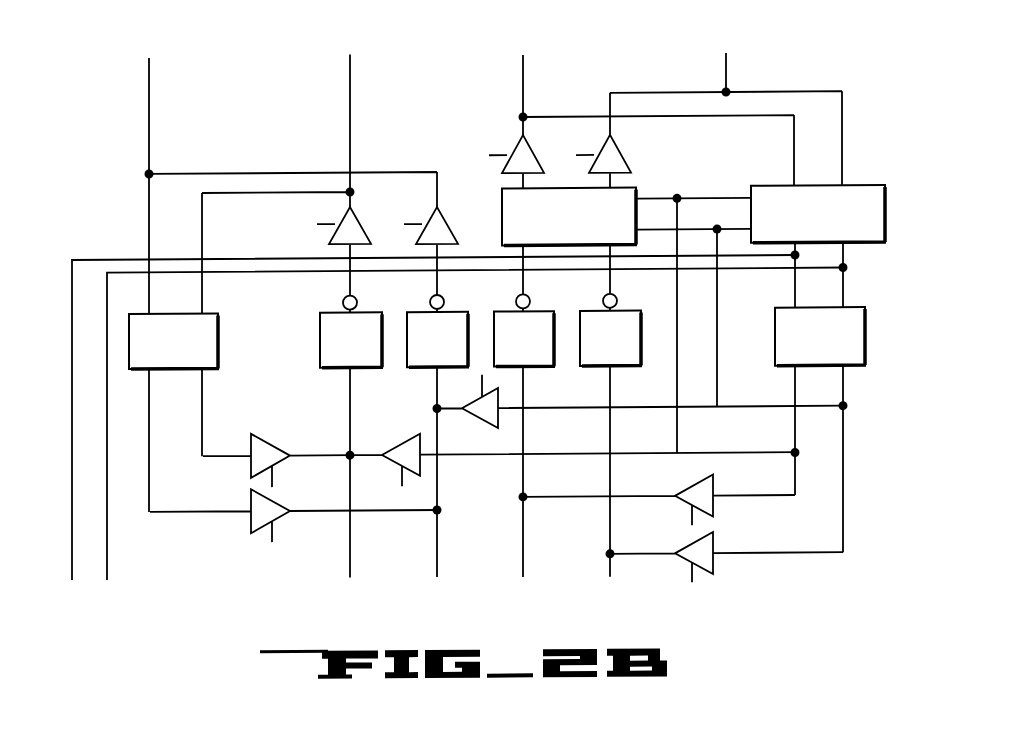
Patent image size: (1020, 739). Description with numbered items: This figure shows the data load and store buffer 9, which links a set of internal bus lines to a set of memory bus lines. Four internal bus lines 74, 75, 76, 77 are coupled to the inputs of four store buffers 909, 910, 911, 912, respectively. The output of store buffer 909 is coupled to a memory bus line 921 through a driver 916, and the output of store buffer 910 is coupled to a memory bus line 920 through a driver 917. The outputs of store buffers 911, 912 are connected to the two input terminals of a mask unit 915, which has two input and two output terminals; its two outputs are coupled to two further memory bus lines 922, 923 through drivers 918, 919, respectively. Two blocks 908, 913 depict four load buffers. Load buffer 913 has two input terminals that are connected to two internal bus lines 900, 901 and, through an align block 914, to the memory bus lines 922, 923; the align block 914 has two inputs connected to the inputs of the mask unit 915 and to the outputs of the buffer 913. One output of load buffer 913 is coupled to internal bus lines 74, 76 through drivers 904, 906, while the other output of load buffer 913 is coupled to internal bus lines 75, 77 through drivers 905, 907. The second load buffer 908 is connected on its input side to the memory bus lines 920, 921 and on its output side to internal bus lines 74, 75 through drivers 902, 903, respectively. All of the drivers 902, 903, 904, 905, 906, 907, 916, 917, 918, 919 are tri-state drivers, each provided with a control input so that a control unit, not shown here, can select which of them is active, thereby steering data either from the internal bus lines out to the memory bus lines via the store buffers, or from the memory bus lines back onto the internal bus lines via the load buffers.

The data load and store buffer 9 is at (105, 51).
The internal bus line 74 is at (350, 572).
The internal bus line 75 is at (437, 573).
The internal bus line 76 is at (523, 574).
The internal bus line 77 is at (610, 574).
The internal bus line 900 is at (73, 568).
The internal bus line 901 is at (107, 569).
The driver 902 is at (273, 445).
The driver 903 is at (277, 494).
The driver 904 is at (390, 463).
The driver 905 is at (472, 423).
The driver 906 is at (716, 512).
The driver 907 is at (716, 570).
The load buffer 908 is at (238, 312).
The store buffer 909 is at (362, 308).
The store buffer 910 is at (456, 310).
The store buffer 911 is at (542, 310).
The store buffer 912 is at (630, 311).
The load buffer 913 is at (855, 313).
The align block 914 is at (860, 189).
The mask unit 915 is at (638, 190).
The driver 916 is at (381, 223).
The driver 917 is at (450, 230).
The driver 918 is at (557, 158).
The driver 919 is at (625, 165).
The memory bus line 920 is at (149, 119).
The memory bus line 921 is at (350, 115).
The memory bus line 922 is at (523, 94).
The memory bus line 923 is at (726, 77).